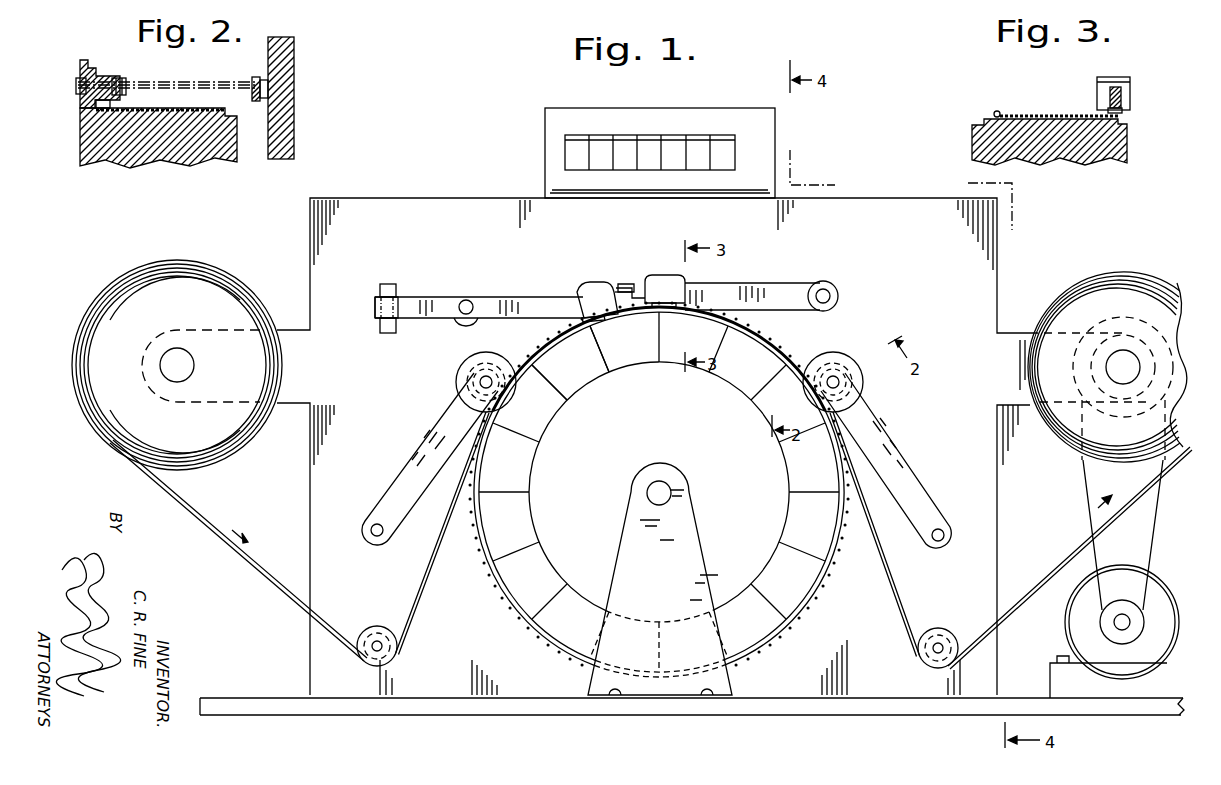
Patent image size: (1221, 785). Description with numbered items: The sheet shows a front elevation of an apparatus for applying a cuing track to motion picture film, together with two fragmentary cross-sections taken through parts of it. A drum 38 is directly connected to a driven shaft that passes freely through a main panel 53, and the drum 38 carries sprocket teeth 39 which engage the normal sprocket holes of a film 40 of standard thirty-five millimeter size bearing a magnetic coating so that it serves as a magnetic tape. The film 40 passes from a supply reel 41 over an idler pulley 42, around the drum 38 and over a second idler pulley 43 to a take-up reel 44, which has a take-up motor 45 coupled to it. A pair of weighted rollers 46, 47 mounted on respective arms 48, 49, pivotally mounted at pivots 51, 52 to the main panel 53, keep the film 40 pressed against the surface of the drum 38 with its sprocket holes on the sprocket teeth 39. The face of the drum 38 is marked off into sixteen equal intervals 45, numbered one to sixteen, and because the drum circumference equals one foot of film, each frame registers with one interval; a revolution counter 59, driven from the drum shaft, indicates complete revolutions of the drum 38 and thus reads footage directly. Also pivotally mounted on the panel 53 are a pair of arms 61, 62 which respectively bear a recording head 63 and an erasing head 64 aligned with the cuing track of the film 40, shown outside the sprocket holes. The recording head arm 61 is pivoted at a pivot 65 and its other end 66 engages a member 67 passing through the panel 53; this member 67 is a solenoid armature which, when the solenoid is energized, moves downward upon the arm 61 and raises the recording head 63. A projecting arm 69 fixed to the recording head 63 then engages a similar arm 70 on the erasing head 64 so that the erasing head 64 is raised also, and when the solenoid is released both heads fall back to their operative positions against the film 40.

In FIG. 1, the drum 38 is at (532, 598).
In FIG. 2, the drum 38 is at (160, 150).
In FIG. 3, the drum 38 is at (1053, 156).
In FIG. 1, the sprocket teeth 39 is at (502, 604).
In FIG. 3, the sprocket teeth 39 is at (997, 111).
In FIG. 1, the film 40 is at (266, 572).
In FIG. 2, the film 40 is at (188, 106).
In FIG. 3, the film 40 is at (1040, 115).
In FIG. 1, the supply reel 41 is at (222, 288).
In FIG. 1, the idler pulley 42 is at (380, 658).
In FIG. 1, the idler pulley 43 is at (943, 636).
In FIG. 1, the take-up reel 44 is at (1112, 278).
In FIG. 1, the take-up motor / equal intervals 45 is at (547, 413).
In FIG. 1, the weighted roller 46 is at (456, 378).
In FIG. 1, the weighted roller 47 is at (865, 385).
In FIG. 2, the weighted roller 47 is at (80, 66).
In FIG. 1, the arm 48 is at (425, 440).
In FIG. 1, the arm 49 is at (903, 440).
In FIG. 1, the pivot 51 is at (378, 537).
In FIG. 1, the pivot 52 is at (947, 530).
In FIG. 1, the main panel 53 is at (362, 193).
In FIG. 2, the main panel 53 is at (285, 134).
In FIG. 1, the revolution counter 59 is at (680, 114).
In FIG. 1, the arm 61 is at (542, 297).
In FIG. 1, the arm 62 is at (782, 284).
In FIG. 3, the arm 62 is at (1121, 98).
In FIG. 1, the recording head 63 is at (592, 282).
In FIG. 1, the erasing head 64 is at (665, 275).
In FIG. 3, the erasing head 64 is at (1130, 80).
In FIG. 1, the pivot 65 is at (468, 302).
In FIG. 1, the end of arm 66 is at (375, 310).
In FIG. 1, the member 67 is at (392, 288).
In FIG. 1, the projecting arm 69 is at (620, 288).
In FIG. 1, the arm 70 is at (636, 288).